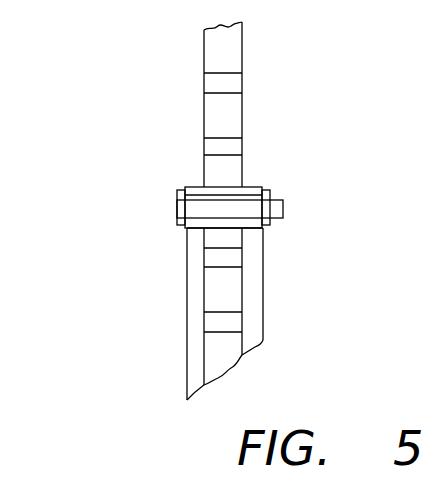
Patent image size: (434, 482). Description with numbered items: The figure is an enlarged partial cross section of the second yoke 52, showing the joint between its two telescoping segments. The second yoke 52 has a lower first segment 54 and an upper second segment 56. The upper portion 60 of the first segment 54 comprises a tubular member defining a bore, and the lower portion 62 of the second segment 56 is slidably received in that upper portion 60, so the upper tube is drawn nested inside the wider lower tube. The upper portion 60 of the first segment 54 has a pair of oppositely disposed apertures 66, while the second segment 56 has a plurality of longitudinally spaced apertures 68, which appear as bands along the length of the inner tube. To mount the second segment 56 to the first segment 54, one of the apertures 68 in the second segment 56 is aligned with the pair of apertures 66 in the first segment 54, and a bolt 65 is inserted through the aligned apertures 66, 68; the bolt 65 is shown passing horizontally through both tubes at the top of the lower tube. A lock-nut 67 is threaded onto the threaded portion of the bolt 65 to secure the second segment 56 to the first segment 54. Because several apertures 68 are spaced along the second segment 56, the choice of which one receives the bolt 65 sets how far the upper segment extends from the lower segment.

The second yoke 52 is at (160, 250).
The first segment 54 is at (263, 322).
The second segment 56 is at (242, 42).
The upper portion of the first segment 60 is at (263, 258).
The lower portion of the second segment 62 is at (242, 160).
The bolt 65 is at (177, 209).
The apertures 66 is at (263, 233).
The lock-nut 67 is at (270, 190).
The apertures 68 is at (242, 82).